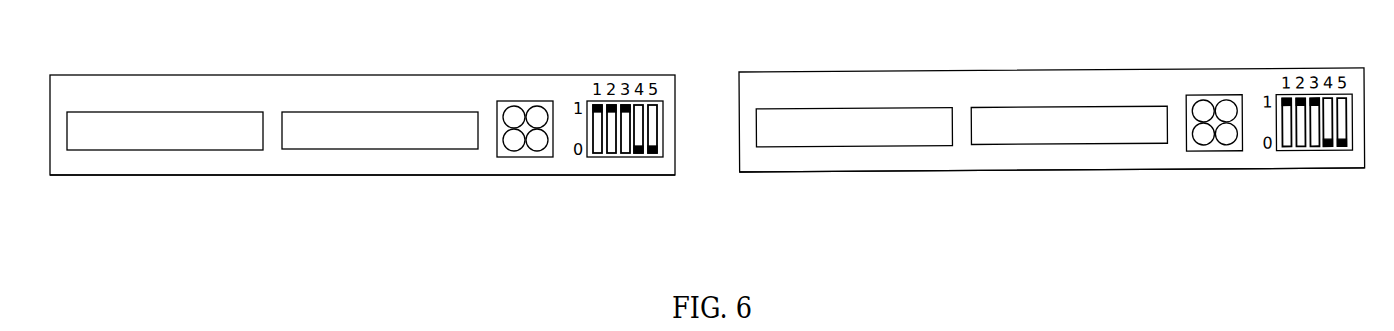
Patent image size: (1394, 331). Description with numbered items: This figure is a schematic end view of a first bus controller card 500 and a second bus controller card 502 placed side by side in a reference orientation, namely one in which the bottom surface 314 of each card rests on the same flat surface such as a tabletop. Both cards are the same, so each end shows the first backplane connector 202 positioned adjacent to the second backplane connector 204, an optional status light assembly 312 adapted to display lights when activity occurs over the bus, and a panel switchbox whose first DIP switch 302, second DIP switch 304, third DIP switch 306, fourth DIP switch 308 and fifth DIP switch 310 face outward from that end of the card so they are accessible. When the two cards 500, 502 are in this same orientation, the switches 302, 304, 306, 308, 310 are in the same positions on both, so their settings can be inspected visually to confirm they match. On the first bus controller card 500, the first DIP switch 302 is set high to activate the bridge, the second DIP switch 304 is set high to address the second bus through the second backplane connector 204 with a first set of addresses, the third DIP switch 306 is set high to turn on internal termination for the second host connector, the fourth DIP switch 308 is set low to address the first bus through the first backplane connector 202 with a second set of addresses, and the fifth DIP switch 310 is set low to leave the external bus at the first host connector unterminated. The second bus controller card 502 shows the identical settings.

The first bus controller card 500 is at (218, 75).
The second bus controller card 502 is at (919, 71).
The second backplane connector 204 is at (177, 141).
The first backplane connector 202 is at (394, 140).
The status light assembly 312 is at (533, 100).
The bottom surface 314 is at (205, 176).
The first DIP switch 302 is at (892, 150).
The second DIP switch 304 is at (899, 160).
The third DIP switch 306 is at (906, 170).
The fourth DIP switch 308 is at (913, 180).
The fifth DIP switch 310 is at (920, 190).